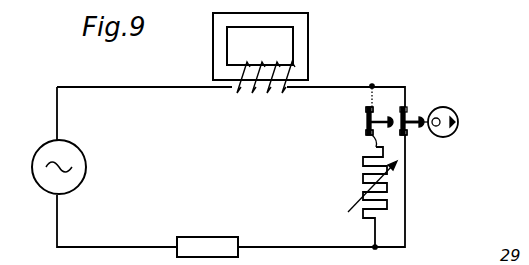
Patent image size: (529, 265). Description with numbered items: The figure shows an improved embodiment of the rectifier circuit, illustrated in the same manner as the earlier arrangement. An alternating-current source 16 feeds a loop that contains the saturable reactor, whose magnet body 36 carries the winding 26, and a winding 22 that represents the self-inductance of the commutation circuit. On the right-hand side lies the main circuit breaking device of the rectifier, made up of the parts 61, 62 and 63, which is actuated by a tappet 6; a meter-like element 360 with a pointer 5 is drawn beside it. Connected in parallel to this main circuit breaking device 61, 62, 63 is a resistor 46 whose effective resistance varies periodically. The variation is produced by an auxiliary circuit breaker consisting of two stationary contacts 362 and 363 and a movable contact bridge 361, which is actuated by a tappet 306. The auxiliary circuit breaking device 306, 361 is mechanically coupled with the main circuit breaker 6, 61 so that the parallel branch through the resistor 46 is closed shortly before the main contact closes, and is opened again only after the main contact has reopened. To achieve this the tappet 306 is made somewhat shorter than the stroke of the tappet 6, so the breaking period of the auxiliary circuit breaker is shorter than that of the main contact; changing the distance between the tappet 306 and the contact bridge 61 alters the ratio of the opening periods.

The alternating-current source 16 is at (78, 158).
The magnet body 36 is at (287, 20).
The winding of the saturable reactor 26 is at (266, 65).
The movable contact bridge 361 is at (366, 118).
The stationary contact 362 is at (375, 107).
The tappet 306 is at (368, 130).
The stationary contact 363 is at (372, 140).
The part of the circuit breaker 62 is at (407, 108).
The contact bridge of the circuit breaker 61 is at (408, 126).
The part of the circuit breaker 63 is at (407, 136).
The indicator 360 is at (456, 130).
The tappet of the circuit breaker 6 is at (440, 120).
The pointer 5 is at (447, 118).
The parallel-connected resistor 46 is at (363, 170).
The winding 22 is at (208, 244).